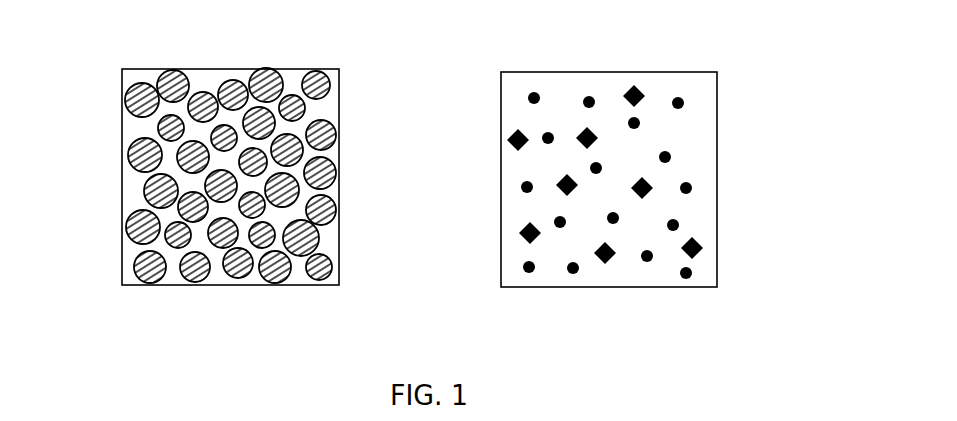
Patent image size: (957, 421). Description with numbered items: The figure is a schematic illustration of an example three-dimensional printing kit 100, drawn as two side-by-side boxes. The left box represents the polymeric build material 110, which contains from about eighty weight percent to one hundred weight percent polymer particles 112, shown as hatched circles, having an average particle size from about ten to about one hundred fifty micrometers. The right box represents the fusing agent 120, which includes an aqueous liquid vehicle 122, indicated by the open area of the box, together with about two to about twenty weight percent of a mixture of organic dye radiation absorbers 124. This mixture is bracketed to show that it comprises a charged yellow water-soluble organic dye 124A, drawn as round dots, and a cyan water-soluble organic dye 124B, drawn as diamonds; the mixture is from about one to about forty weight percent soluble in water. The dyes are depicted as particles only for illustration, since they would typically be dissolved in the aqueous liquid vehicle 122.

The three-dimensional printing kit 100 is at (140, 25).
The polymeric build material 110 is at (281, 207).
The polymer particles 112 is at (318, 136).
The fusing agent 120 is at (679, 212).
The aqueous liquid vehicle 122 is at (682, 131).
The mixture of organic dye radiation absorbers 124 is at (684, 182).
The charged yellow water-soluble organic dye 124A is at (690, 186).
The cyan water-soluble organic dye 124B is at (698, 245).